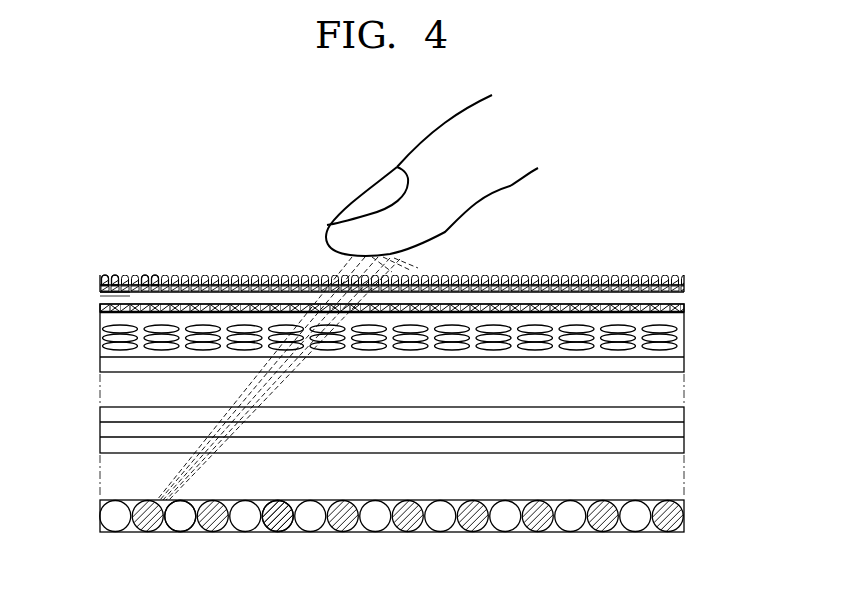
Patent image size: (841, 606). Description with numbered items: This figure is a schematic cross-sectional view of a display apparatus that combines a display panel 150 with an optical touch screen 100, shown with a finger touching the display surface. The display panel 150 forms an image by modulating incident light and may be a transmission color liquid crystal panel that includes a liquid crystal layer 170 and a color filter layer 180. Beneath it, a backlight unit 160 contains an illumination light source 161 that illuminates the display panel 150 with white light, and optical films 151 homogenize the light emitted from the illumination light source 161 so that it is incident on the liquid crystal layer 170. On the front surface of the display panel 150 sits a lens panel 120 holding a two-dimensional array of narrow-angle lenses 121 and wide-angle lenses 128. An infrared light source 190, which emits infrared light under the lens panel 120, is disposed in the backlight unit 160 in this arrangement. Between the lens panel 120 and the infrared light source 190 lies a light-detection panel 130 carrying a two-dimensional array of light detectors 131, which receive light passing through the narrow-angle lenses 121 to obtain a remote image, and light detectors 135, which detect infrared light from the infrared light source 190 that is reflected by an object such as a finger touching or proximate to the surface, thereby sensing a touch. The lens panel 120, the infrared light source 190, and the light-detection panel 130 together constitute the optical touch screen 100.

The optical touch screen 100 is at (99, 275).
The lens panel 120 is at (686, 278).
The narrow-angle lenses 121 is at (105, 275).
The wide-angle lenses 128 is at (116, 275).
The light-detection panel 130 is at (686, 292).
The light detectors 131 is at (112, 290).
The light detectors 135 is at (118, 296).
The display panel 150 is at (93, 304).
The optical films 151 is at (684, 409).
The backlight unit 160 is at (686, 516).
The illumination light source 161 is at (180, 523).
The liquid crystal layer 170 is at (678, 334).
The color filter layer 180 is at (686, 308).
The infrared light source 190 is at (278, 523).